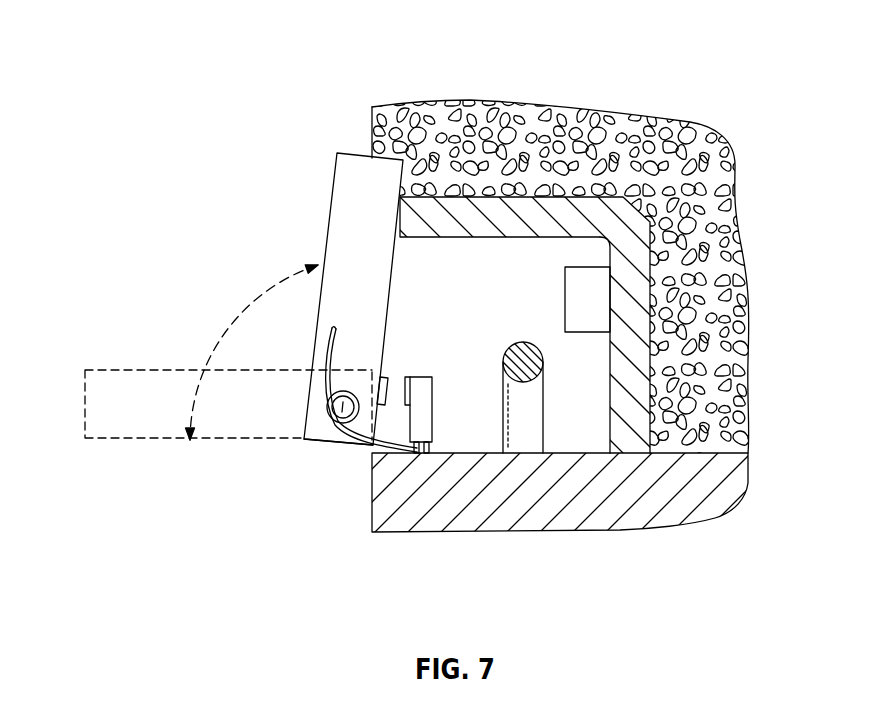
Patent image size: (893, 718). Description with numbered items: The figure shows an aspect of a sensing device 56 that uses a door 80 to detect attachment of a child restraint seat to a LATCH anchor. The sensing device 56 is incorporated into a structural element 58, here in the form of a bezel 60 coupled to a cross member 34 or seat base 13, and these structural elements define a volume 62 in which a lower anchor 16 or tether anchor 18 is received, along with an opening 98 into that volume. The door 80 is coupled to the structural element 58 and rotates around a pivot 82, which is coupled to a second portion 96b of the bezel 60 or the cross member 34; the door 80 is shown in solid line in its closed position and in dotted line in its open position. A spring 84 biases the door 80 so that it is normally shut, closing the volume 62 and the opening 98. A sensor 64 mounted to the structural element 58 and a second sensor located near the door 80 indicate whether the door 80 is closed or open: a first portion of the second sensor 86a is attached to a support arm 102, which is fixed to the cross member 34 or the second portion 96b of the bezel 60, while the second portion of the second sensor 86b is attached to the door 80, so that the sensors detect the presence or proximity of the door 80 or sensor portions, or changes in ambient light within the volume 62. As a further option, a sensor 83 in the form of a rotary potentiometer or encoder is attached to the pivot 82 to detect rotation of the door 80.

The sensing device 56 is at (708, 122).
The structural element 58 is at (633, 225).
The bezel 60 is at (637, 292).
The volume 62 is at (493, 260).
The sensor 64 is at (588, 300).
The door 80 is at (335, 172).
The pivot 82 is at (332, 421).
The sensor 83 is at (330, 440).
The spring 84 is at (367, 453).
The first portion of the second sensor 86a is at (383, 378).
The second portion of the second sensor 86b is at (410, 436).
The second portion of the bezel 96b is at (447, 453).
The opening 98 is at (403, 253).
The support arm 102 is at (418, 453).
The lower anchor 16 is at (548, 467).
The tether anchor 18 is at (522, 433).
The cross member 34 is at (563, 519).
The seat base 13 is at (705, 512).